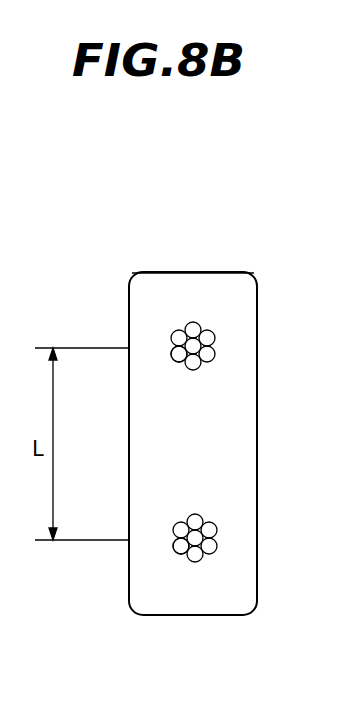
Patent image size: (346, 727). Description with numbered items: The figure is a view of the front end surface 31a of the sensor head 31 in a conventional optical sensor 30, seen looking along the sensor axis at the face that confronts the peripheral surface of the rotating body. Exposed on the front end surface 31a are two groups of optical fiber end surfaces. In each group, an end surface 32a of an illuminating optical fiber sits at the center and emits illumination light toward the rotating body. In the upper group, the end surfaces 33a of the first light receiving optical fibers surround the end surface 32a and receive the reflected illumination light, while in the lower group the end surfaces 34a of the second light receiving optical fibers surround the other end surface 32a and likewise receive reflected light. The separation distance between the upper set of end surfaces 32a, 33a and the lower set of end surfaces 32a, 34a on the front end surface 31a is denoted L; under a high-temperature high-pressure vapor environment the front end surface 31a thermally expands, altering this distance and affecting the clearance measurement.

The optical sensor 30 is at (218, 701).
The sensor head 31 is at (258, 253).
The front end surface 31a is at (187, 293).
The end surfaces of illuminating optical fibers 32a is at (198, 341).
The end surfaces of first light receiving optical fibers 33a is at (172, 360).
The end surfaces of second light receiving optical fibers 34a is at (174, 552).